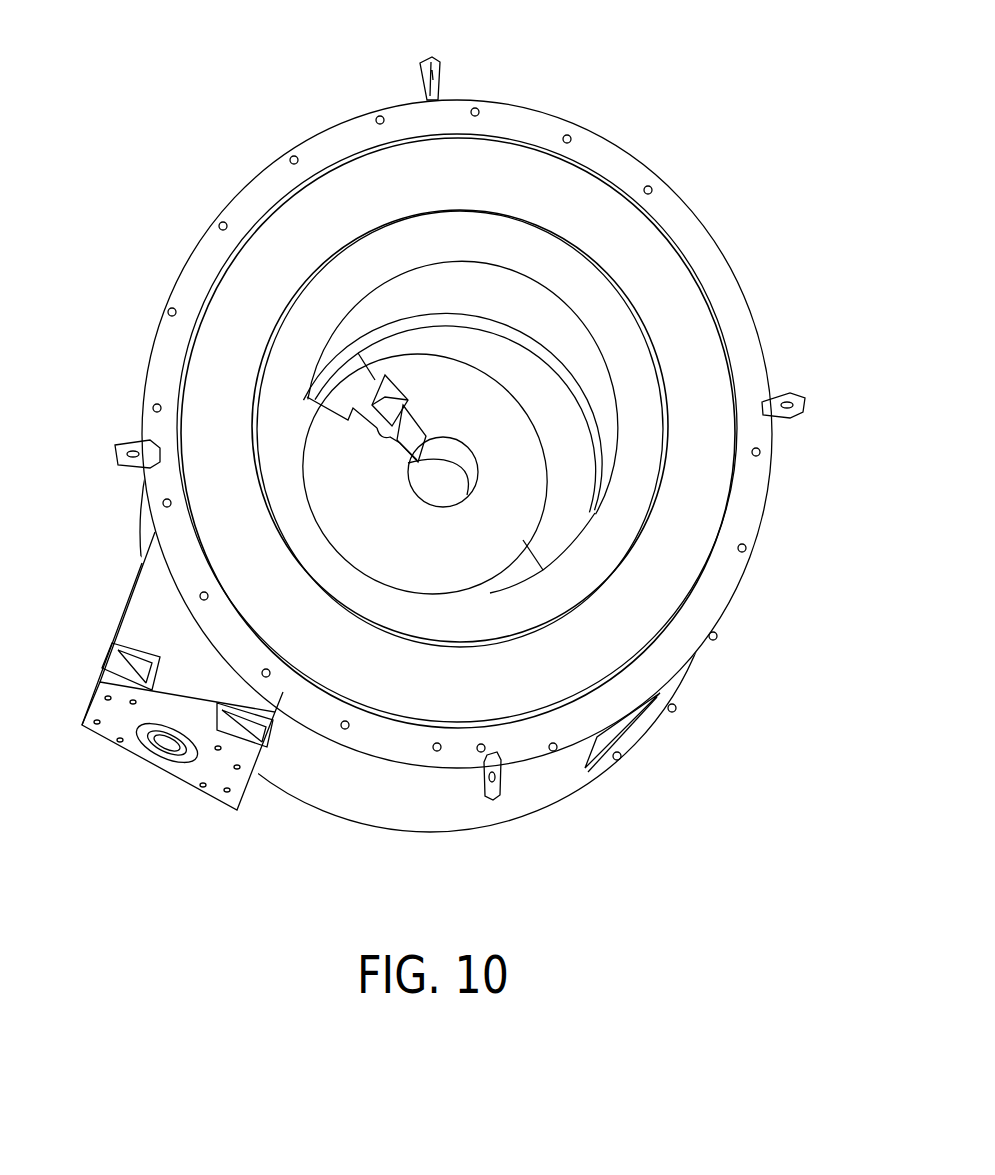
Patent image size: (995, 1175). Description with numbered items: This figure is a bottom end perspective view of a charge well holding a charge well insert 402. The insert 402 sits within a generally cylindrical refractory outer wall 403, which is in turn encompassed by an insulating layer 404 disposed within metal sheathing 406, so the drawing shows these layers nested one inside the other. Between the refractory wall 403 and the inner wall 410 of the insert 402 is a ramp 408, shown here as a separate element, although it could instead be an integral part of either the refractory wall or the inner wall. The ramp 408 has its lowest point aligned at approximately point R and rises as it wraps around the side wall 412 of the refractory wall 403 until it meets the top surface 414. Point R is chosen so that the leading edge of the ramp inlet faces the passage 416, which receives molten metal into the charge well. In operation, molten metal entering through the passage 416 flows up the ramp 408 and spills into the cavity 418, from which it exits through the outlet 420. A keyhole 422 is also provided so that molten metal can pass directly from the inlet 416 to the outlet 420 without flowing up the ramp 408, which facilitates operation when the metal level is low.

The point R is at (256, 192).
The charge well insert 402 is at (440, 340).
The refractory outer wall 403 is at (615, 342).
The insulating layer 404 is at (690, 495).
The metal sheathing 406 is at (670, 657).
The ramp 408 is at (560, 432).
The inner wall 410 is at (337, 453).
The side wall 412 is at (418, 293).
The top surface 414 is at (440, 567).
The passage 416 is at (163, 750).
The cavity 418 is at (458, 506).
The outlet 420 is at (603, 737).
The keyhole 422 is at (407, 413).